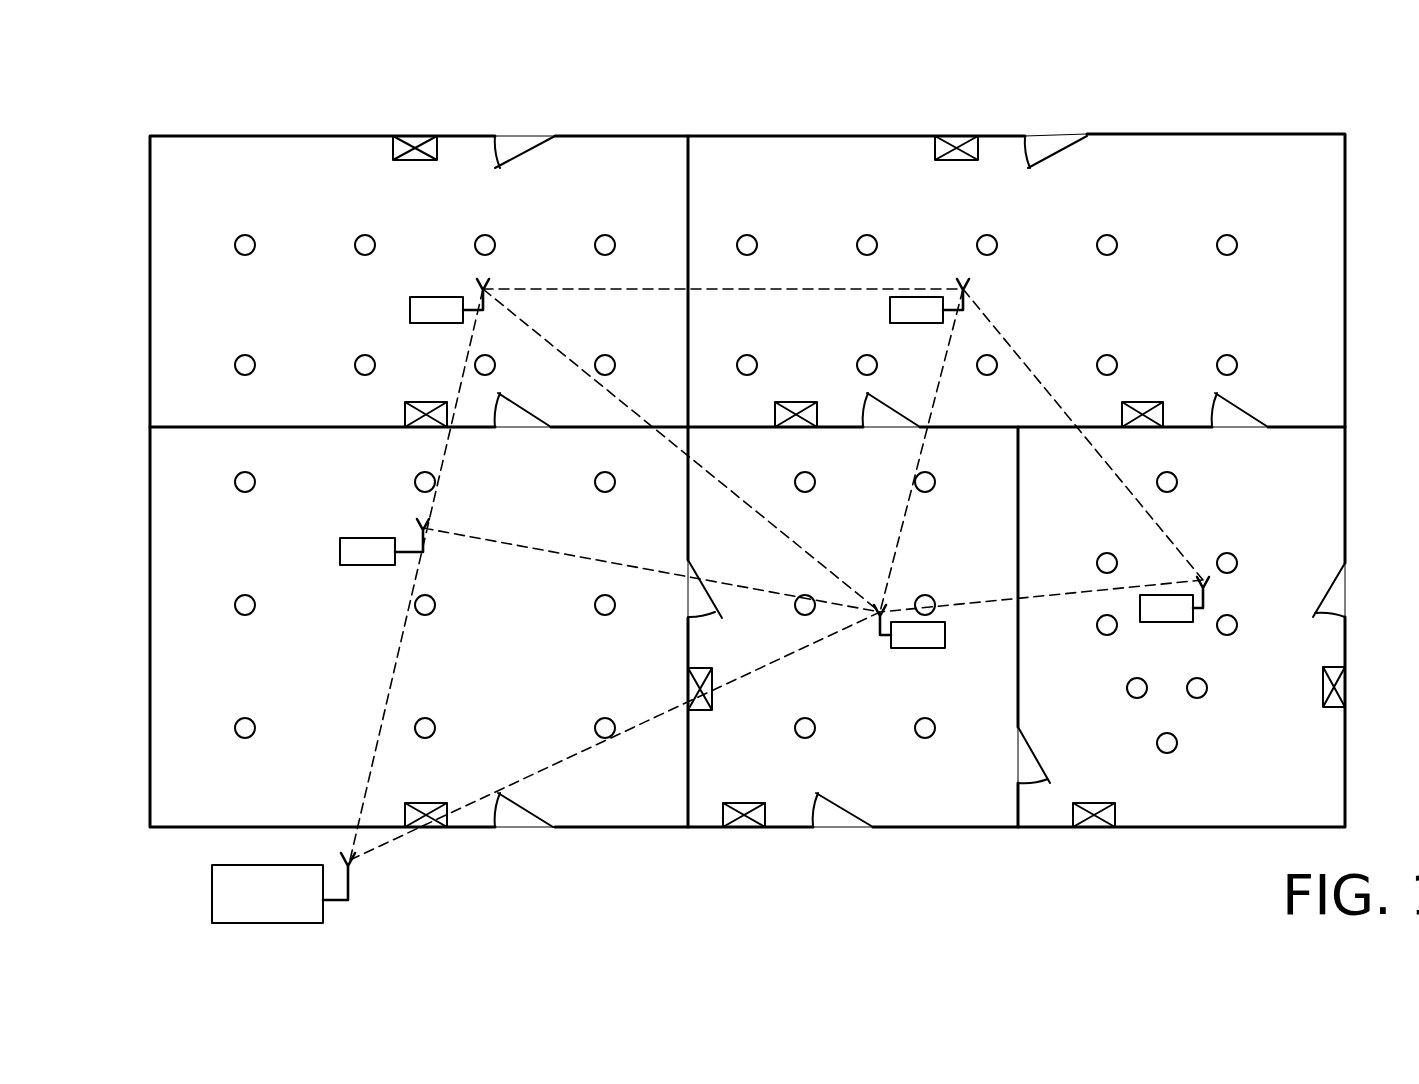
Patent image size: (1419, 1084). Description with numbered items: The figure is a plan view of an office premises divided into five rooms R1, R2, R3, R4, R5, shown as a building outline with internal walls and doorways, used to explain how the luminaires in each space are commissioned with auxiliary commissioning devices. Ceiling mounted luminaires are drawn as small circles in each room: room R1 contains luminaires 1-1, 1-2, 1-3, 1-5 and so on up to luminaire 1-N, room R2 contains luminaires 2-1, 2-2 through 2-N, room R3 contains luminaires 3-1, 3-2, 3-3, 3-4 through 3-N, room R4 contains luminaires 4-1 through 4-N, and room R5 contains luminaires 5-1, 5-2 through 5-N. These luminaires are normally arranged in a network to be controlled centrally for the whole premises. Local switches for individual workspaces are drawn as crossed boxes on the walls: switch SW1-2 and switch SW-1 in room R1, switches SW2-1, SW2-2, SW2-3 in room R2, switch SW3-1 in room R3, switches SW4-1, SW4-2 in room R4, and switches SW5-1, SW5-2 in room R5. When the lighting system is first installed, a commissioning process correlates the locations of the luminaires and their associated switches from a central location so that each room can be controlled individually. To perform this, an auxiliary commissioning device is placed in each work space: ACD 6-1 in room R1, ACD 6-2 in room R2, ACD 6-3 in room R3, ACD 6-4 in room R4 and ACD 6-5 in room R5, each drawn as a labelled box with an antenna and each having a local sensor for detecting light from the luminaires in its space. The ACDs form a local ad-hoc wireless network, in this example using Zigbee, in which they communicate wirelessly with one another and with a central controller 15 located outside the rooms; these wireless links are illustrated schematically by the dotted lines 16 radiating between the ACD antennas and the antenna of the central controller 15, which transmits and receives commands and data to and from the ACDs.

The room R1 is at (165, 152).
The room R2 is at (1320, 165).
The room R3 is at (165, 447).
The room R4 is at (990, 808).
The room R5 is at (1320, 800).
The switch SW1-2 is at (418, 136).
The switch SW-1 is at (405, 415).
The switch SW2-1 is at (957, 136).
The switch SW2-2 is at (797, 402).
The switch SW2-3 is at (1143, 402).
The switch SW3-1 is at (427, 830).
The switch SW4-1 is at (742, 830).
The switch SW4-2 is at (712, 688).
The switch SW5-1 is at (1093, 830).
The switch SW5-2 is at (1323, 690).
The luminaire 1-1 is at (245, 235).
The luminaire 1-2 is at (365, 235).
The luminaire 1-3 is at (485, 235).
The luminaire 1-5 is at (605, 235).
The luminaire 1-N is at (605, 355).
The luminaire 2-1 is at (747, 235).
The luminaire 2-2 is at (867, 235).
The luminaire 2-N is at (1227, 352).
The luminaire 3-1 is at (235, 482).
The luminaire 3-2 is at (414, 482).
The luminaire 3-3 is at (605, 493).
The luminaire 3-4 is at (248, 616).
The luminaire 3-N is at (605, 717).
The luminaire 4-1 is at (816, 482).
The luminaire 4-N is at (925, 739).
The luminaire 5-1 is at (1178, 482).
The luminaire 5-2 is at (1105, 552).
The luminaire 5-N is at (1238, 562).
The auxiliary commissioning device 6-1 is at (410, 310).
The auxiliary commissioning device 6-2 is at (890, 310).
The auxiliary commissioning device 6-3 is at (340, 552).
The auxiliary commissioning device 6-4 is at (918, 648).
The auxiliary commissioning device 6-5 is at (1165, 622).
The central controller 15 is at (212, 885).
The dotted lines 16 is at (675, 289).